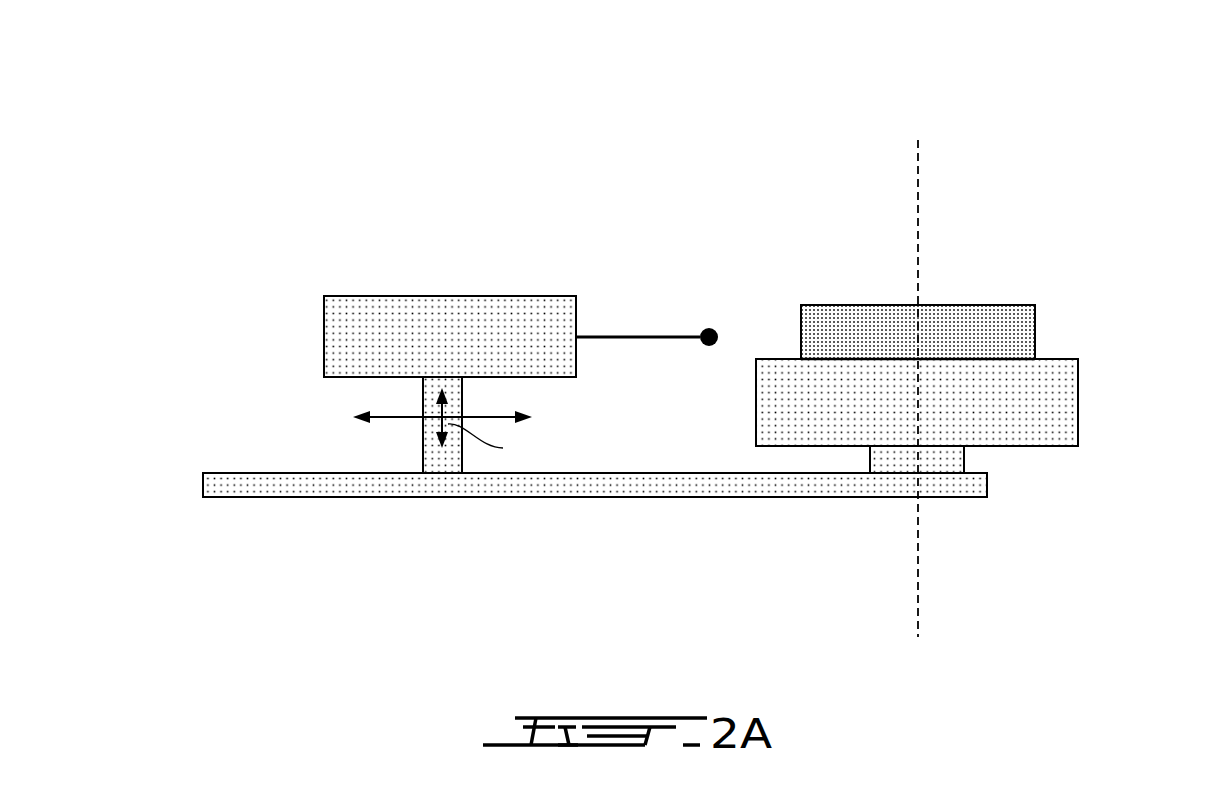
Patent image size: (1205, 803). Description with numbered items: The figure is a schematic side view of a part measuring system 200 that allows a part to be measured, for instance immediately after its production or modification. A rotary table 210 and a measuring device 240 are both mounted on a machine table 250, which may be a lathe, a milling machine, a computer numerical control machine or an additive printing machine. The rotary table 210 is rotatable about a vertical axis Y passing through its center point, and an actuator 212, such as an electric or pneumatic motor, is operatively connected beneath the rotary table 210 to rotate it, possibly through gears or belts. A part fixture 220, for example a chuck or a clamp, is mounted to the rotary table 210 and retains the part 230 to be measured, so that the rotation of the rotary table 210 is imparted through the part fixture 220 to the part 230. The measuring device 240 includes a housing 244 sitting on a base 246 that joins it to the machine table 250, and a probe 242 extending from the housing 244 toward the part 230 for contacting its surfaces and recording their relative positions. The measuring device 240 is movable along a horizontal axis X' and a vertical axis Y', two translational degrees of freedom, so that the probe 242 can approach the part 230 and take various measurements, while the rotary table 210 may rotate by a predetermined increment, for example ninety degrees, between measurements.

The part measuring system 200 is at (195, 157).
The rotary table 210 is at (1060, 405).
The actuator 212 is at (937, 462).
The part fixture 220 is at (993, 360).
The part 230 is at (975, 330).
The measuring device 240 is at (285, 299).
The probe 242 is at (668, 337).
The housing 244 is at (434, 322).
The base 246 is at (423, 396).
The machine table 250 is at (223, 486).